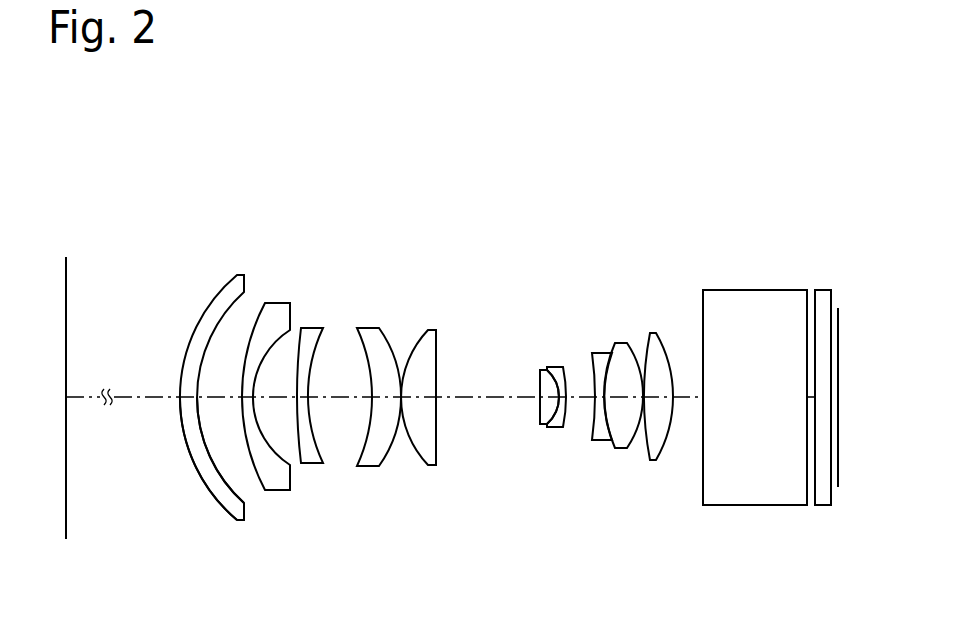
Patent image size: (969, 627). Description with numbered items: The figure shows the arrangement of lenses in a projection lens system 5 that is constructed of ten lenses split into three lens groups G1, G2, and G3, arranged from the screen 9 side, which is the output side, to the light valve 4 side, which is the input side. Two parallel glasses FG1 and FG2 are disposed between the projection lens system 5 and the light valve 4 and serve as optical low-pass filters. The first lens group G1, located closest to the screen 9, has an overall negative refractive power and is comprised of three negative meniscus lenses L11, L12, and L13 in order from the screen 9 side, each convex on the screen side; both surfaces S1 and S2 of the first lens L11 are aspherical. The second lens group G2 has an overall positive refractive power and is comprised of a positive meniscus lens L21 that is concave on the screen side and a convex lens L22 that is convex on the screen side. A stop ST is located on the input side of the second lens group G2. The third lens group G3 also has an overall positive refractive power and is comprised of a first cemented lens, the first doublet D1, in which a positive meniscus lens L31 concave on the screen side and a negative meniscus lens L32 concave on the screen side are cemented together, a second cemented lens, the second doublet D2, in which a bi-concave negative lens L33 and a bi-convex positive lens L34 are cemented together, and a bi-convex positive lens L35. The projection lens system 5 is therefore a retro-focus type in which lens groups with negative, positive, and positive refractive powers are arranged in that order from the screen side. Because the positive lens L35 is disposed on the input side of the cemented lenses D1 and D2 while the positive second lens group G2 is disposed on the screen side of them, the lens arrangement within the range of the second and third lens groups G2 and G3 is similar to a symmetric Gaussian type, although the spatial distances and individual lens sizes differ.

The screen 9 is at (66, 318).
The projection lens system 5 is at (233, 153).
The first lens group G1 is at (312, 204).
The second lens group G2 is at (460, 204).
The third lens group G3 is at (700, 204).
The first lens L11 is at (228, 283).
The second negative meniscus lens L12 is at (278, 317).
The third negative meniscus lens L13 is at (312, 337).
The positive meniscus lens L21 is at (369, 337).
The convex lens L22 is at (430, 335).
The positive meniscus lens L31 is at (544, 368).
The negative meniscus lens L32 is at (557, 372).
The bi-concave negative lens L33 is at (603, 355).
The bi-convex positive lens L34 is at (620, 345).
The bi-convex positive lens L35 is at (654, 340).
The stop ST is at (528, 374).
The surface S1 is at (227, 513).
The surface S2 is at (240, 492).
The first doublet D1 is at (534, 382).
The second doublet D2 is at (609, 372).
The parallel glass FG1 is at (745, 313).
The parallel glass FG2 is at (823, 300).
The light valve 4 is at (838, 355).